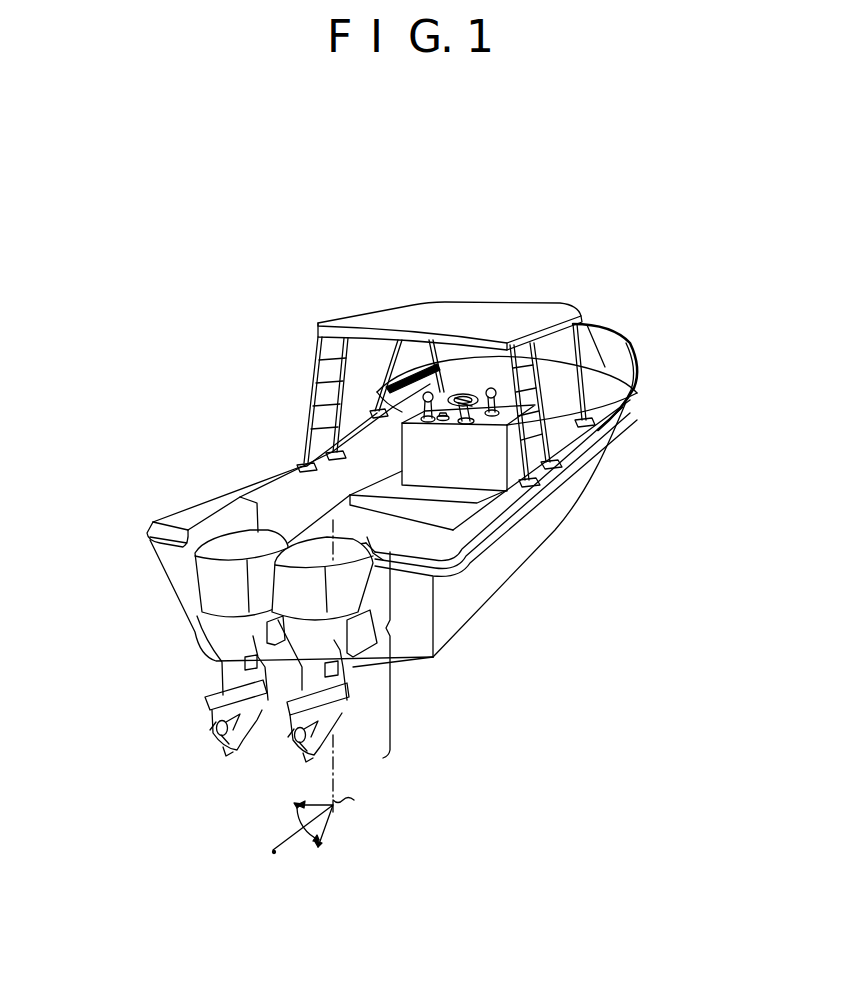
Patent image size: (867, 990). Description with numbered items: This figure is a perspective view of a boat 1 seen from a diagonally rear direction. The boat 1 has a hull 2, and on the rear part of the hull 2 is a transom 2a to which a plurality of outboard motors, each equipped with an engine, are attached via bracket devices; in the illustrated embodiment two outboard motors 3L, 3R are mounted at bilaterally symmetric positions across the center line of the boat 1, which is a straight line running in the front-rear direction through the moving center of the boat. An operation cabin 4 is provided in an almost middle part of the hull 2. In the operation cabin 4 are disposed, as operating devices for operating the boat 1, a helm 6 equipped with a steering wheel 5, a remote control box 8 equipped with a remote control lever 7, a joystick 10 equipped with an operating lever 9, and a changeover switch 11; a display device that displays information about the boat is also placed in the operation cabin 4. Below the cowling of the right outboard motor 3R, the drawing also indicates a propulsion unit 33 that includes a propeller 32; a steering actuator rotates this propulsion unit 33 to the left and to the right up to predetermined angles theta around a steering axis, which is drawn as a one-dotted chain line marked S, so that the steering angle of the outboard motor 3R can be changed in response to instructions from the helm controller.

The boat 1 is at (256, 402).
The hull 2 is at (234, 492).
The transom 2a is at (385, 597).
The outboard motor 3L is at (216, 586).
The outboard motor 3R is at (295, 603).
The operation cabin 4 is at (391, 445).
The steering wheel 5 is at (468, 405).
The helm 6 is at (468, 407).
The remote control lever 7 is at (492, 388).
The remote control box 8 is at (637, 396).
The operating lever 9 is at (428, 392).
The joystick 10 is at (408, 414).
The changeover switch 11 is at (461, 395).
The propeller 32 is at (322, 735).
The propulsion unit 33 is at (405, 655).